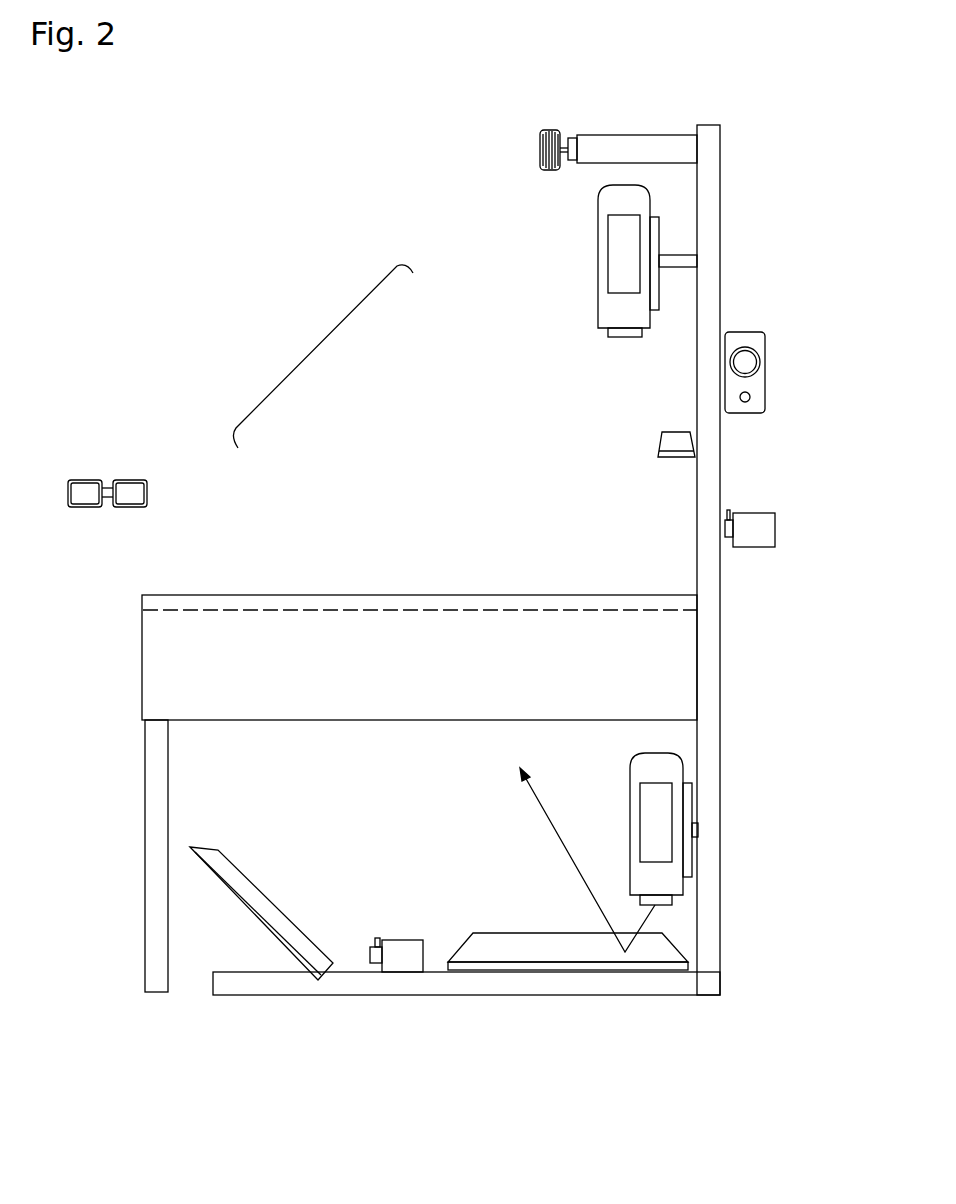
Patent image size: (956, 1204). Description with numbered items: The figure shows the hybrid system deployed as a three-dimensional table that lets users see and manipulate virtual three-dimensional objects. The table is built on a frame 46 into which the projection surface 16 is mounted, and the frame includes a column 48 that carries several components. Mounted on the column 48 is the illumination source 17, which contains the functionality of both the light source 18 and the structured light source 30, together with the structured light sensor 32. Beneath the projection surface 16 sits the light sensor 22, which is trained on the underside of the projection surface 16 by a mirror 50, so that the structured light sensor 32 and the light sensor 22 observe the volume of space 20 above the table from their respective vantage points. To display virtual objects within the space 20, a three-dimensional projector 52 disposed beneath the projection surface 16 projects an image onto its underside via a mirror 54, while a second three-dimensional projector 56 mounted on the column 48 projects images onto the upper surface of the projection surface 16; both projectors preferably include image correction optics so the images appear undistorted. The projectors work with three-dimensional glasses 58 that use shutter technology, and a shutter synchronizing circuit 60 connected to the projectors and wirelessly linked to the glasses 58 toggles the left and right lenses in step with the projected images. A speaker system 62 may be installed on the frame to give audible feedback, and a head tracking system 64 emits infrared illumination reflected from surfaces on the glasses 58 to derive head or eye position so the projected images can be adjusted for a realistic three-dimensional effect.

The projection surface 16 is at (309, 601).
The illumination source 17 is at (564, 122).
The light source 18 is at (577, 130).
The volume of space 20 is at (322, 342).
The light sensor 22 is at (403, 960).
The structured light source 30 is at (628, 149).
The structured light sensor 32 is at (577, 130).
The frame 46 is at (152, 778).
The column 48 is at (712, 232).
The mirror 50 is at (270, 898).
The 3D projector 52 is at (677, 885).
The mirror 54 is at (598, 972).
The second 3D projector 56 is at (597, 300).
The 3D glasses 58 is at (97, 480).
The shutter synchronizing circuit 60 is at (660, 443).
The speaker system 62 is at (767, 343).
The head tracking system 64 is at (765, 538).